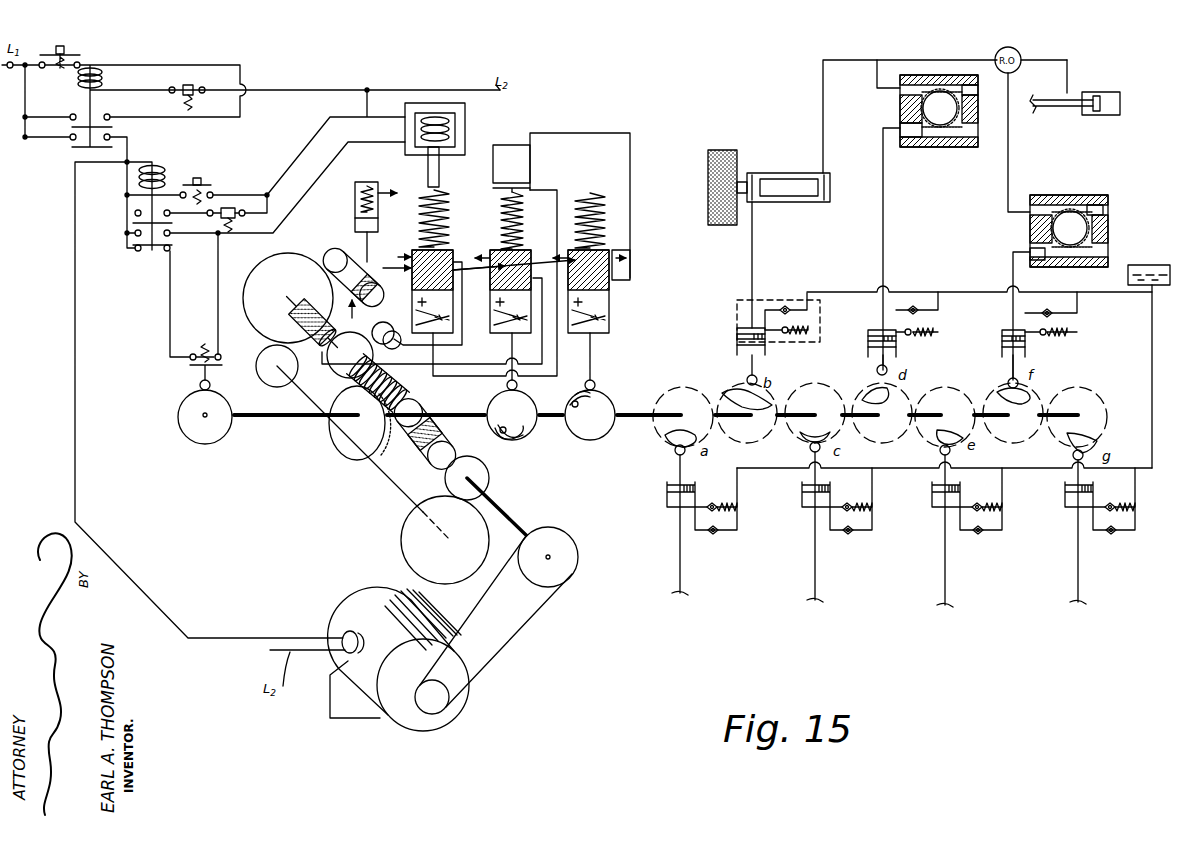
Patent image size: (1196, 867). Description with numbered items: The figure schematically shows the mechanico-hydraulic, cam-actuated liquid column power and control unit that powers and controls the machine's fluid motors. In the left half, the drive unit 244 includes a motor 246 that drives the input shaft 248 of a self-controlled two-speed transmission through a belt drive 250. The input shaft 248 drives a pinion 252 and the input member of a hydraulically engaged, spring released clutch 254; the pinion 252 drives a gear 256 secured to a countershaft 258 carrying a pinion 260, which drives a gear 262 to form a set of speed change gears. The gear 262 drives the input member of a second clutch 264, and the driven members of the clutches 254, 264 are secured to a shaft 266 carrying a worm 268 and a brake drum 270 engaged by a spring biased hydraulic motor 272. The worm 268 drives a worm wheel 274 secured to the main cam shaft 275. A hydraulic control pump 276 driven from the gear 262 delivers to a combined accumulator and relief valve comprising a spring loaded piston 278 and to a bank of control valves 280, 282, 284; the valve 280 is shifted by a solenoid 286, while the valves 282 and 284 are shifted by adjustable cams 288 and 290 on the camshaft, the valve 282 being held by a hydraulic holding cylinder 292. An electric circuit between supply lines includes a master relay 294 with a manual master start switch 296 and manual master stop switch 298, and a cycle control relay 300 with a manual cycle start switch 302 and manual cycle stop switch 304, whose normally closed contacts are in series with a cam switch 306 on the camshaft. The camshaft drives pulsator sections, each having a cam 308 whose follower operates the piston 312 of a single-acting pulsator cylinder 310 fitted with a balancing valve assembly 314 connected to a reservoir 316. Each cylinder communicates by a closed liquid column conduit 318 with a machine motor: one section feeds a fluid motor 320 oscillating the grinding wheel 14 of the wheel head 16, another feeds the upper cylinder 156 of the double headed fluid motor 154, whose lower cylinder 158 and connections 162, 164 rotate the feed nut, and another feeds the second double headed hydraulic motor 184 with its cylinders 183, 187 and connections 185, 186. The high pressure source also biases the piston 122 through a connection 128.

The grinding wheel 14 is at (720, 163).
The wheel head 16 is at (762, 161).
The piston 122 is at (1102, 113).
The connection 128 is at (1068, 85).
The double headed fluid motor 154 is at (984, 130).
The upper cylinder 156 is at (910, 133).
The lower cylinder 158 is at (970, 88).
The connection 162 is at (883, 163).
The connection 164 is at (875, 82).
The cylinder 183 is at (1040, 258).
The second double headed hydraulic motor 184 is at (1108, 230).
The connection 185 is at (1013, 268).
The connection 186 is at (1007, 200).
The cylinder 187 is at (1097, 200).
The drive unit 244 is at (557, 681).
The motor 246 is at (360, 607).
The input shaft 248 is at (540, 530).
The belt drive 250 is at (514, 632).
The pinion 252 is at (480, 470).
The hydraulically engaged, spring released clutch 254 is at (427, 445).
The gear 256 is at (422, 538).
The countershaft 258 is at (388, 485).
The pinion 260 is at (280, 388).
The gear 262 is at (268, 283).
The hydraulically engaged, spring released clutch 264 is at (296, 314).
The shaft 266 is at (408, 417).
The worm 268 is at (380, 390).
The brake drum 270 is at (340, 360).
The spring biased hydraulic motor 272 is at (372, 324).
The worm wheel 274 is at (360, 437).
The main cam shaft 275 is at (272, 420).
The hydraulic control pump 276 is at (350, 258).
The spring loaded piston 278 is at (355, 220).
The control valve 280 is at (440, 250).
The control valve 282 is at (518, 250).
The control valve 284 is at (612, 258).
The solenoid 286 is at (466, 127).
The adjustable cam 288 is at (505, 445).
The adjustable cam 290 is at (572, 407).
The hydraulic holding cylinder 292 is at (517, 168).
The master relay 294 is at (104, 75).
The manual master start switch 296 is at (81, 53).
The manual master stop switch 298 is at (190, 84).
The cycle control relay 300 is at (166, 172).
The manual cycle start switch 302 is at (200, 180).
The manual cycle stop switch 304 is at (228, 206).
The cam switch 306 is at (198, 388).
The cam 308 is at (740, 388).
The single-acting pulsator cylinder 310 is at (737, 337).
The piston 312 is at (742, 352).
The balancing valve assembly 314 is at (777, 301).
The reservoir 316 is at (1146, 268).
The closed liquid column conduit 318 is at (752, 272).
The fluid motor 320 is at (788, 172).